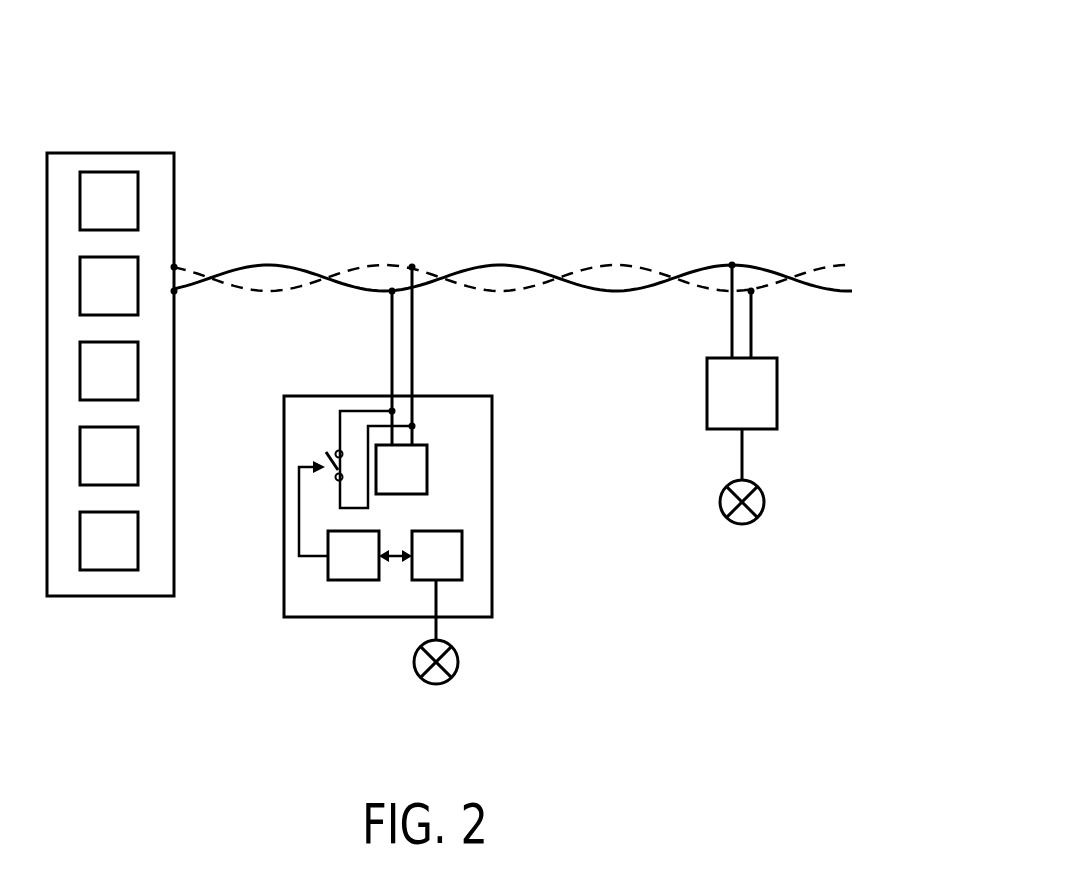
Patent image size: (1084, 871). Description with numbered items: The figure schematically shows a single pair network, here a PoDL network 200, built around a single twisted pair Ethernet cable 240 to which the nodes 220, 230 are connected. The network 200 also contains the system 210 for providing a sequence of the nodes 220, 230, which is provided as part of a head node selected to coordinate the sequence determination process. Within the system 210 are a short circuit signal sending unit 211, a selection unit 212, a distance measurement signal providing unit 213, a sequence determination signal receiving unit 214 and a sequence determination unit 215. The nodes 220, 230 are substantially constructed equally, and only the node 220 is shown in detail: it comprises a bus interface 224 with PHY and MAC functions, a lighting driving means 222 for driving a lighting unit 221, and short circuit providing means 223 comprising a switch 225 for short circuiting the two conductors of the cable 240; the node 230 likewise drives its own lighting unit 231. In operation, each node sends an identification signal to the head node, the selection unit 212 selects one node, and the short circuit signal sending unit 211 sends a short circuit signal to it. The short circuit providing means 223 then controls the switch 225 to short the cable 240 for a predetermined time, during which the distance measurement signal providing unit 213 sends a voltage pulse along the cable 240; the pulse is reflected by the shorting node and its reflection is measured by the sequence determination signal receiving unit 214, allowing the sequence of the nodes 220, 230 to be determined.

The PoDL network 200 is at (664, 108).
The system for providing a sequence of nodes 210 is at (115, 153).
The short circuit signal sending unit 211 is at (138, 193).
The selection unit 212 is at (138, 262).
The distance measurement signal providing unit 213 is at (138, 364).
The sequence determination signal receiving unit 214 is at (138, 455).
The sequence determination unit 215 is at (138, 541).
The node 220 is at (493, 457).
The lighting unit 221 is at (458, 664).
The lighting driving means 222 is at (462, 558).
The short circuit providing means 223 is at (350, 580).
The bus interface 224 is at (427, 452).
The switch 225 is at (325, 446).
The node 230 is at (777, 402).
The lighting unit 231 is at (764, 505).
The single twisted pair Ethernet cable 240 is at (825, 293).